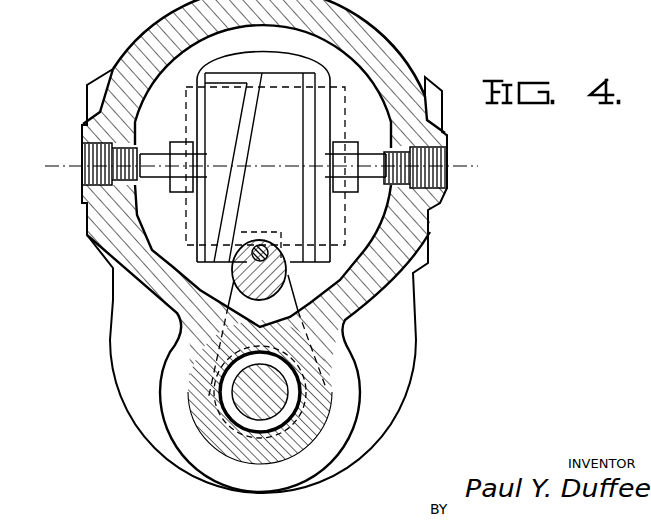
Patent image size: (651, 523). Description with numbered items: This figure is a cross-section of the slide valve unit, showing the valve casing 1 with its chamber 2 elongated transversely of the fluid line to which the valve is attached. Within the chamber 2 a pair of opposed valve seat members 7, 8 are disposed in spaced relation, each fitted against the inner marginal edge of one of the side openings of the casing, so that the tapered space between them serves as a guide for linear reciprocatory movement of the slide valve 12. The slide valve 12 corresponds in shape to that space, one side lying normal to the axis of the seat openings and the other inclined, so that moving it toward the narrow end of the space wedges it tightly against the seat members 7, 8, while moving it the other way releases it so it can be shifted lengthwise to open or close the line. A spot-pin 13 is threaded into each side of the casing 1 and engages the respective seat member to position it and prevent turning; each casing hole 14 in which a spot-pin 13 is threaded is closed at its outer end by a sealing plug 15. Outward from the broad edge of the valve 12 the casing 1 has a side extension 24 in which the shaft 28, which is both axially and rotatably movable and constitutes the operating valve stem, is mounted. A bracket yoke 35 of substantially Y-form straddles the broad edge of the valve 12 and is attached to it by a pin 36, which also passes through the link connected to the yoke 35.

The valve casing 1 is at (360, 36).
The chamber 2 is at (368, 90).
The valve seat member 7 is at (307, 132).
The valve seat member 8 is at (200, 113).
The slide valve 12 is at (261, 167).
The spot-pin 13 is at (162, 177).
The casing hole 14 is at (88, 212).
The sealing plug 15 is at (87, 138).
The side extension 24 is at (227, 457).
The shaft 28 is at (280, 390).
The bracket yoke 35 is at (284, 284).
The pin 36 is at (258, 240).